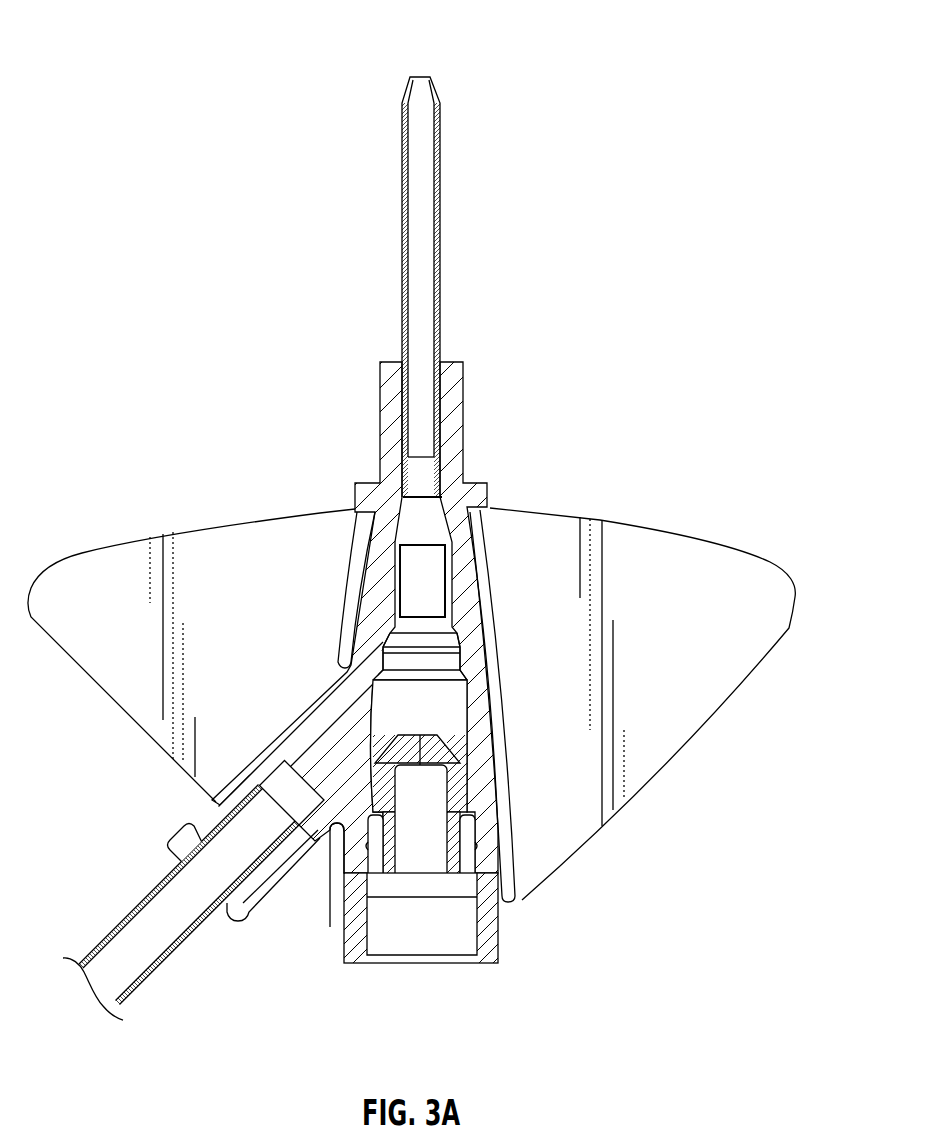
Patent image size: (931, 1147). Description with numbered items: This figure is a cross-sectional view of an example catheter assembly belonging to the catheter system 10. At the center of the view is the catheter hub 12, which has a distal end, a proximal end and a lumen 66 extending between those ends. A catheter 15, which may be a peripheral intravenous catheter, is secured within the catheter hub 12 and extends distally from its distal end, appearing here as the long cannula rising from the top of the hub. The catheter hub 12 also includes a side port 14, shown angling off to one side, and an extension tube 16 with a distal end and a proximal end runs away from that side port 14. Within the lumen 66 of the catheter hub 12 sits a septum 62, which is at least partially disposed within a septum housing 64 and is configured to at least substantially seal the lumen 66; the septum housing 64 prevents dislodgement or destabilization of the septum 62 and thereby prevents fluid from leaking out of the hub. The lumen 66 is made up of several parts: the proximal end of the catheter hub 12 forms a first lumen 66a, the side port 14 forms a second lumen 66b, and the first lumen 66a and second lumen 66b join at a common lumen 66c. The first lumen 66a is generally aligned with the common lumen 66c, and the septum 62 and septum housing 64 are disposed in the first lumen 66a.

The catheter system 10 is at (249, 56).
The catheter hub 12 is at (482, 470).
The side port 14 is at (170, 842).
The catheter 15 is at (440, 232).
The extension tube 16 is at (160, 968).
The septum 62 is at (373, 847).
The septum housing 64 is at (468, 860).
The lumen 66 is at (448, 676).
The first lumen 66a is at (440, 953).
The second lumen 66b is at (348, 782).
The common lumen 66c is at (432, 723).